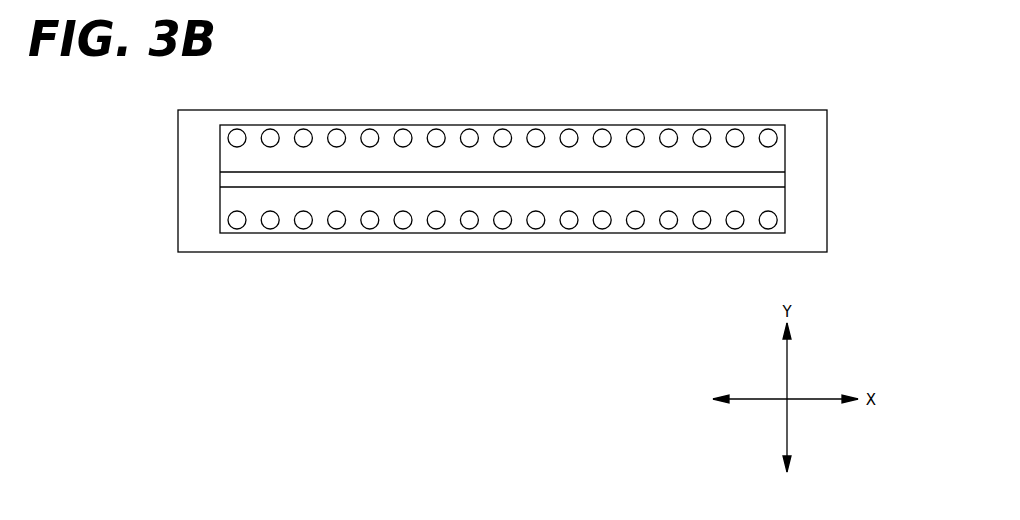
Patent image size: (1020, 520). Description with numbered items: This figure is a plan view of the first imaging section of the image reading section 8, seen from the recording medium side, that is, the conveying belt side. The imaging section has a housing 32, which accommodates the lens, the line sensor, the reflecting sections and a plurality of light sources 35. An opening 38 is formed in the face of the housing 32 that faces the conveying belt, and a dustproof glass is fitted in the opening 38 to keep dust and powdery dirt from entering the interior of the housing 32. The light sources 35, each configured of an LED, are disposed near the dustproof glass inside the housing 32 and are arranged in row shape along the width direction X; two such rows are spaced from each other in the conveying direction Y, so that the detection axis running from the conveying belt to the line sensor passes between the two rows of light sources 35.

The image reading section 8 is at (842, 178).
The housing 32 is at (520, 252).
The light sources 35 is at (370, 218).
The opening 38 is at (222, 190).